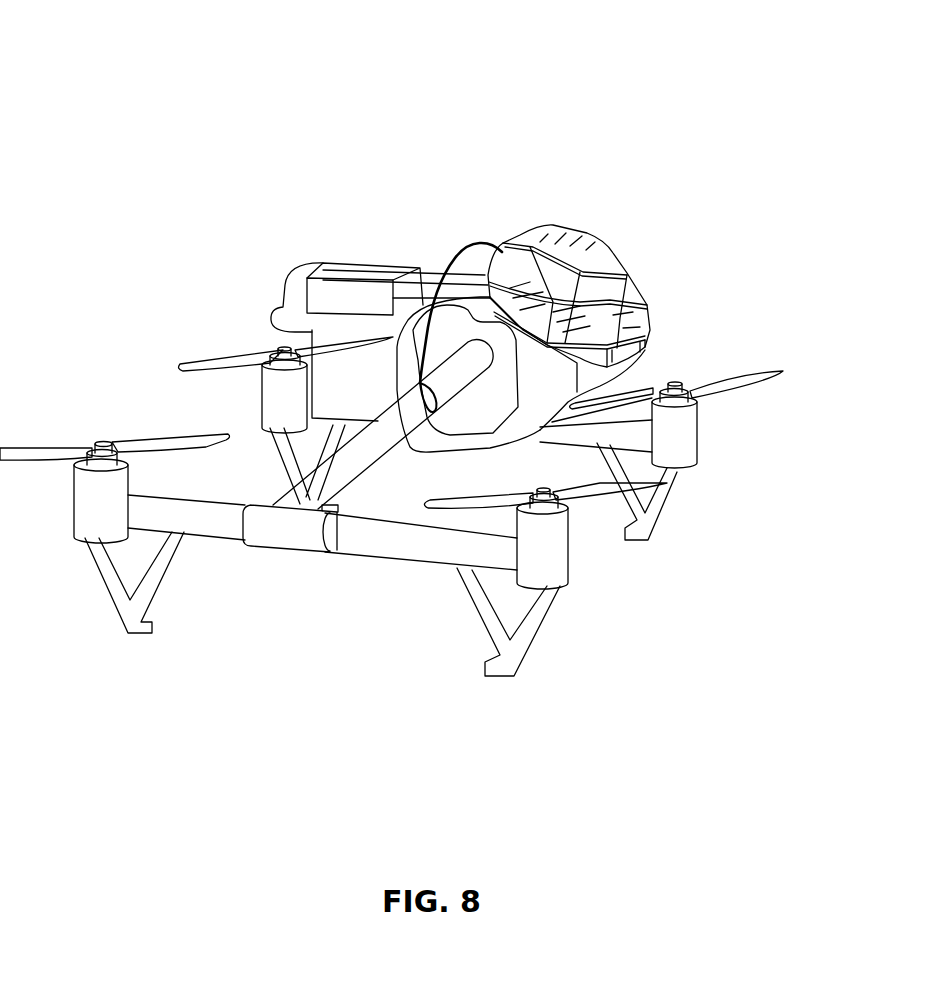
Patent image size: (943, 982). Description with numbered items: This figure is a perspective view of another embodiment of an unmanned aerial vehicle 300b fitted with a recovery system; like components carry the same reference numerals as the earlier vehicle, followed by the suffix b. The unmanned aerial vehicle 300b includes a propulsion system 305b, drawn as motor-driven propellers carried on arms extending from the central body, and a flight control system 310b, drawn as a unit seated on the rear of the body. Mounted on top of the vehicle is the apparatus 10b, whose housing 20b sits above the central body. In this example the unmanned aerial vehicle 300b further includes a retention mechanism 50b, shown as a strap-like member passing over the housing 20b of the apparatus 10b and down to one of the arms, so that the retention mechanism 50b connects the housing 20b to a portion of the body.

The unmanned aerial vehicle 300b is at (128, 148).
The flight control system 310b is at (407, 310).
The retention mechanism 50b is at (462, 243).
The apparatus 10b is at (619, 228).
The housing 20b is at (643, 320).
The propulsion system 305b is at (786, 355).